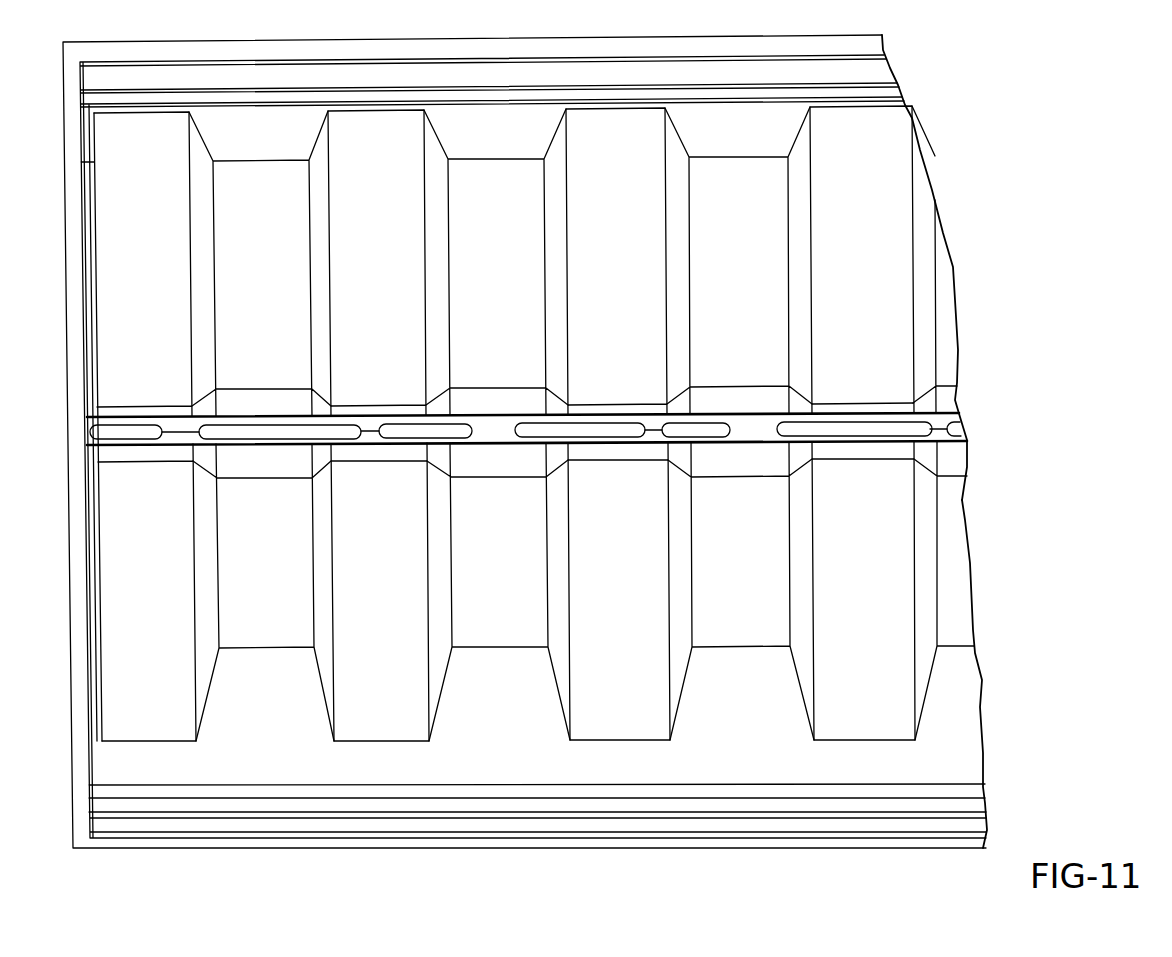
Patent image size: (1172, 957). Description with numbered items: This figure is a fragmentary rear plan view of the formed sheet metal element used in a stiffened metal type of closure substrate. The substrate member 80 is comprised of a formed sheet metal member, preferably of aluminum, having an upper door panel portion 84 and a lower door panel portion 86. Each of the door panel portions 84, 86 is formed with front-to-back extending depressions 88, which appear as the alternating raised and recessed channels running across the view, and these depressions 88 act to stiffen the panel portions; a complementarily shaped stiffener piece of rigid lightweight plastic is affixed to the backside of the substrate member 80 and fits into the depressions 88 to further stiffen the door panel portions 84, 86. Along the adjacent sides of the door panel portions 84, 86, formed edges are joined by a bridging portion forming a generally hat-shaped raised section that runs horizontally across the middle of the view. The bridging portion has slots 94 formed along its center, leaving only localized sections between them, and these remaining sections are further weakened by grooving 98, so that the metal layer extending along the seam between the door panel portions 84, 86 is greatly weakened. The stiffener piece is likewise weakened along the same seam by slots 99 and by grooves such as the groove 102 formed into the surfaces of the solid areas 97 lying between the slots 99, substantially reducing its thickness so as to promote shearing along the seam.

The substrate member 80 is at (934, 151).
The upper door panel portion 84 is at (999, 257).
The lower door panel portion 86 is at (1000, 540).
The depressions 88 is at (270, 237).
The slots 94 is at (100, 433).
The solid areas 97 is at (177, 440).
The grooving 98 is at (940, 428).
The slots 99 is at (110, 436).
The groove 102 is at (167, 427).